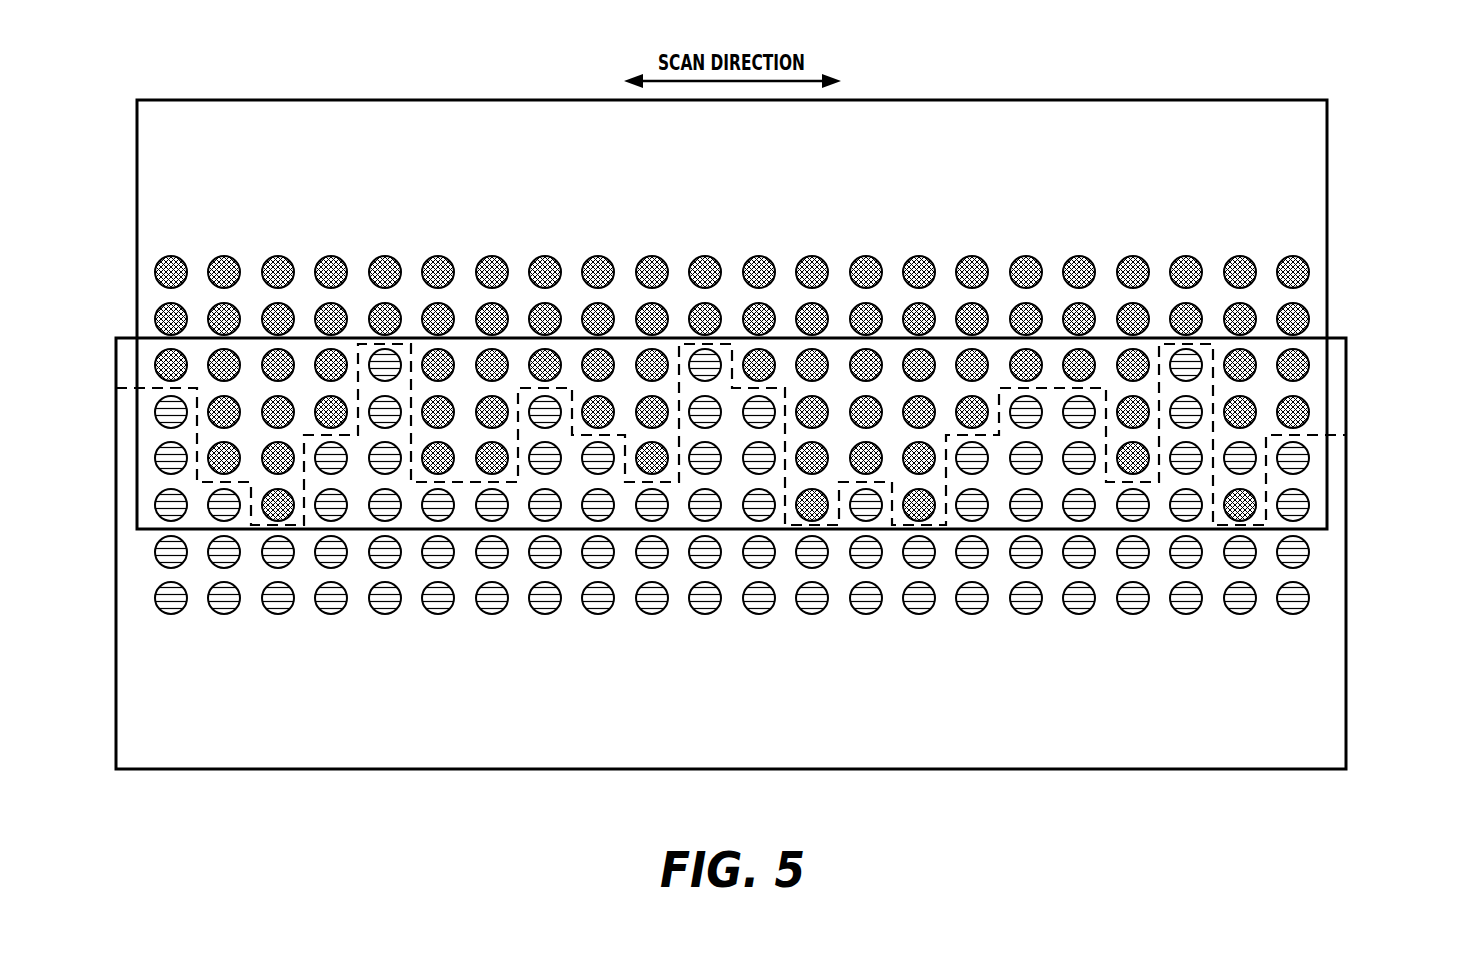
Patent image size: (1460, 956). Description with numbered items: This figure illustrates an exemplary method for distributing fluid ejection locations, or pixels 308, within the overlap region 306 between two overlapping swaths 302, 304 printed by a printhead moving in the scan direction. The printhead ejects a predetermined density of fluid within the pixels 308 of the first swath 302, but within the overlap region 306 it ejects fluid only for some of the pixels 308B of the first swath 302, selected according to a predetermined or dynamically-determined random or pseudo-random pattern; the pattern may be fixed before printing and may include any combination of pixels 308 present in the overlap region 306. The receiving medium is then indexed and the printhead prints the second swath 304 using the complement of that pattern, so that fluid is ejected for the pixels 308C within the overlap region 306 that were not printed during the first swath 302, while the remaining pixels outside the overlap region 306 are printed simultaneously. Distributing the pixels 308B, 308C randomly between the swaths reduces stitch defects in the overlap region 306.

The first swath 302 is at (422, 113).
The second swath 304 is at (423, 750).
The overlap region 306 is at (1312, 483).
The pixels 308 is at (1303, 272).
The pixels of the first swath within the overlap region 308B is at (1310, 414).
The pixels of the second swath within the overlap region 308C is at (1300, 508).